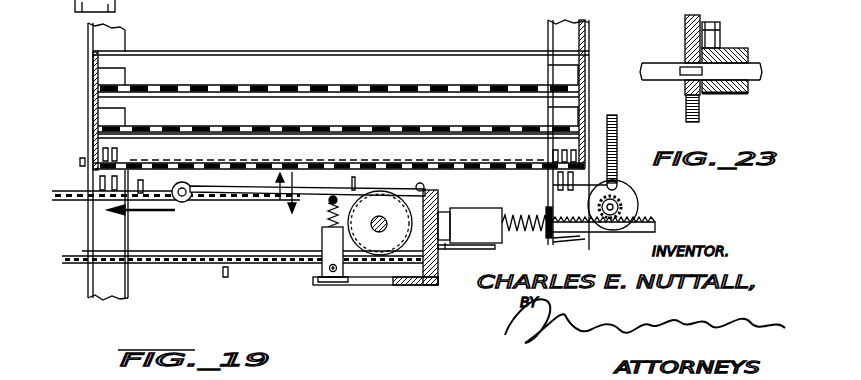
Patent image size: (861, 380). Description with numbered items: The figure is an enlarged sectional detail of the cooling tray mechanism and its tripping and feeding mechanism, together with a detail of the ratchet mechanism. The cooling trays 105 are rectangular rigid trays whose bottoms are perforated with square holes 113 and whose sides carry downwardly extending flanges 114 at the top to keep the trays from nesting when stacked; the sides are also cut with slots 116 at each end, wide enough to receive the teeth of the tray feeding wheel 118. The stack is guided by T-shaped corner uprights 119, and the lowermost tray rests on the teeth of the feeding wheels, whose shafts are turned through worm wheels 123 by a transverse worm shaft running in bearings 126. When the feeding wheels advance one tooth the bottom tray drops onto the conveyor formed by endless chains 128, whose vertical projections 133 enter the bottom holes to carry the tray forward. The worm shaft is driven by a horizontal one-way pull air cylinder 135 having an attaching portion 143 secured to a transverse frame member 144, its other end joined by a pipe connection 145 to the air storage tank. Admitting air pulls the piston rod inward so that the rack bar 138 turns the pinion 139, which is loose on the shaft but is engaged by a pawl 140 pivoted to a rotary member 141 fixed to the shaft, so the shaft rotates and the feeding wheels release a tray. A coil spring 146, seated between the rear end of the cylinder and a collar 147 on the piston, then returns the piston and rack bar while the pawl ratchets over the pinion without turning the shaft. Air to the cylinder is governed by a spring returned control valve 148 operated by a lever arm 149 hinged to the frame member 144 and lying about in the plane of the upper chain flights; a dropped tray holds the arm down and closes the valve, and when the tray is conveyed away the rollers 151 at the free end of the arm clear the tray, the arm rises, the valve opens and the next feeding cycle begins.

In FIG. 19, the cooling tray 105 is at (280, 123).
In FIG. 19, the square holes 113 is at (352, 83).
In FIG. 19, the downwardly extending flanges 114 is at (222, 58).
In FIG. 19, the slots 116 is at (118, 73).
In FIG. 19, the tray feeding wheel 118 is at (95, 172).
In FIG. 19, the corner upright 119 is at (90, 290).
In FIG. 19, the worm wheel 123 is at (623, 112).
In FIG. 23, the bearing 126 is at (770, 51).
In FIG. 19, the endless chain 128 is at (157, 266).
In FIG. 19, the vertical projection 133 is at (224, 2).
In FIG. 19, the air cylinder 135 is at (466, 213).
In FIG. 19, the rack bar 138 is at (657, 224).
In FIG. 19, the pinion 139 is at (618, 202).
In FIG. 23, the pinion 139 is at (722, 96).
In FIG. 19, the pawl 140 is at (619, 181).
In FIG. 23, the pawl 140 is at (723, 39).
In FIG. 19, the rotary member 141 is at (621, 187).
In FIG. 23, the rotary member 141 is at (686, 34).
In FIG. 19, the attaching portion 143 is at (433, 206).
In FIG. 19, the transverse frame member 144 is at (427, 288).
In FIG. 19, the pipe connection 145 is at (464, 250).
In FIG. 19, the coil spring 146 is at (510, 238).
In FIG. 19, the collar 147 is at (548, 239).
In FIG. 19, the control valve 148 is at (334, 256).
In FIG. 19, the lever arm 149 is at (313, 190).
In FIG. 19, the rollers 151 is at (187, 201).